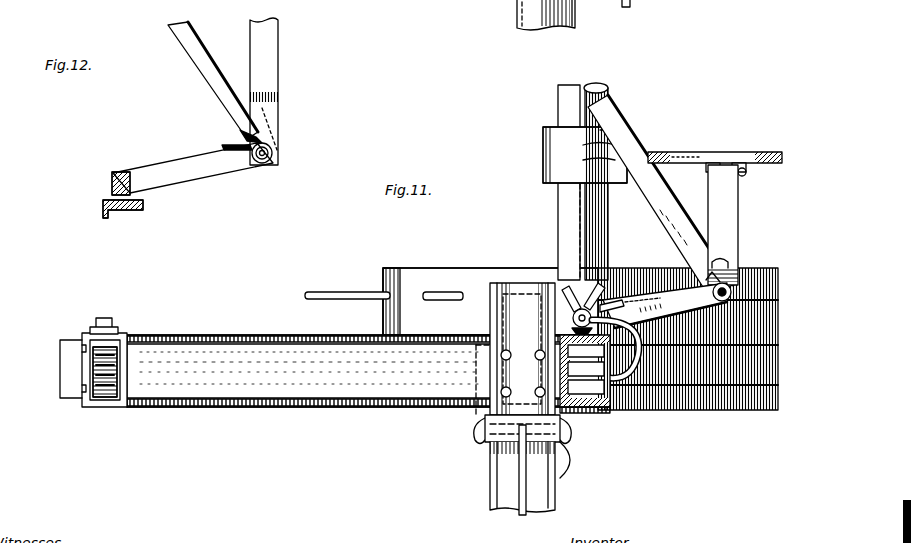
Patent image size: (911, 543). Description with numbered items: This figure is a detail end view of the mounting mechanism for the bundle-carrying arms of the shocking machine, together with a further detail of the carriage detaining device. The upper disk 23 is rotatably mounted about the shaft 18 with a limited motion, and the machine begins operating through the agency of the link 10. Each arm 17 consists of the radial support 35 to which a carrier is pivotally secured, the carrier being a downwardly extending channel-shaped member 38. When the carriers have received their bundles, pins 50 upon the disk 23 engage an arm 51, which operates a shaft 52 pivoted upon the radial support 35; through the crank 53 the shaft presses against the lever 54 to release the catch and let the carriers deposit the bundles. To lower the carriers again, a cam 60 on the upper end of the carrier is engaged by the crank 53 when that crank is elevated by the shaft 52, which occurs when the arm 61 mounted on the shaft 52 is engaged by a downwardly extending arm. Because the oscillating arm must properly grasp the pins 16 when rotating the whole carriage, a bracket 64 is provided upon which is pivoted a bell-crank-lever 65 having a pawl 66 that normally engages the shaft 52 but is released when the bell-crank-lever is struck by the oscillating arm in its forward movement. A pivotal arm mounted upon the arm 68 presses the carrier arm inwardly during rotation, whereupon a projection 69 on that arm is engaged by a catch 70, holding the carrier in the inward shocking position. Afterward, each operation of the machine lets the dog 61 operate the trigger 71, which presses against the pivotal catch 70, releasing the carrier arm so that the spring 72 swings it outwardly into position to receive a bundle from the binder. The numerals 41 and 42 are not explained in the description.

In FIG. 11, the link 10 is at (730, 400).
In FIG. 11, the pin 16 is at (108, 315).
In FIG. 12, the arm 17 is at (103, 216).
In FIG. 11, the arm 17 is at (358, 407).
In FIG. 11, the shaft 18 is at (560, 220).
In FIG. 11, the upper disk 23 is at (470, 270).
In FIG. 11, the radial support 35 is at (308, 390).
In FIG. 11, the channel-shaped member 38 is at (490, 480).
In FIG. 11, the pin 41 is at (512, 498).
In FIG. 11, the spring 42 is at (566, 470).
In FIG. 11, the pins 50 is at (320, 300).
In FIG. 11, the arm 51 is at (574, 295).
In FIG. 12, the shaft 52 is at (112, 182).
In FIG. 11, the shaft 52 is at (610, 300).
In FIG. 11, the crank 53 is at (514, 318).
In FIG. 11, the lever 54 is at (490, 440).
In FIG. 11, the cam 60 is at (560, 375).
In FIG. 11, the arm 61 is at (583, 268).
In FIG. 12, the bracket 64 is at (278, 98).
In FIG. 11, the bracket 64 is at (730, 210).
In FIG. 12, the bell-crank-lever 65 is at (212, 88).
In FIG. 11, the bell-crank-lever 65 is at (668, 215).
In FIG. 12, the pawl 66 is at (194, 173).
In FIG. 11, the pawl 66 is at (667, 300).
In FIG. 11, the arm 68 is at (708, 152).
In FIG. 11, the projection 69 is at (82, 352).
In FIG. 11, the catch 70 is at (630, 410).
In FIG. 11, the trigger 71 is at (630, 395).
In FIG. 11, the spring 72 is at (108, 392).